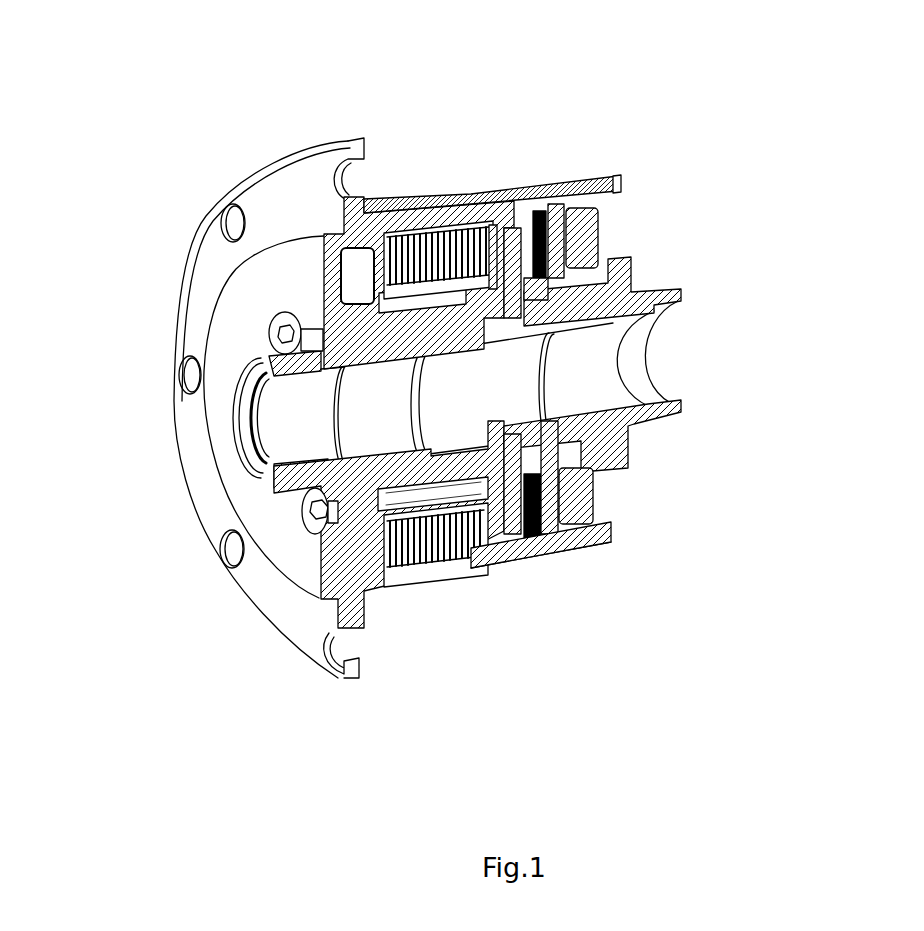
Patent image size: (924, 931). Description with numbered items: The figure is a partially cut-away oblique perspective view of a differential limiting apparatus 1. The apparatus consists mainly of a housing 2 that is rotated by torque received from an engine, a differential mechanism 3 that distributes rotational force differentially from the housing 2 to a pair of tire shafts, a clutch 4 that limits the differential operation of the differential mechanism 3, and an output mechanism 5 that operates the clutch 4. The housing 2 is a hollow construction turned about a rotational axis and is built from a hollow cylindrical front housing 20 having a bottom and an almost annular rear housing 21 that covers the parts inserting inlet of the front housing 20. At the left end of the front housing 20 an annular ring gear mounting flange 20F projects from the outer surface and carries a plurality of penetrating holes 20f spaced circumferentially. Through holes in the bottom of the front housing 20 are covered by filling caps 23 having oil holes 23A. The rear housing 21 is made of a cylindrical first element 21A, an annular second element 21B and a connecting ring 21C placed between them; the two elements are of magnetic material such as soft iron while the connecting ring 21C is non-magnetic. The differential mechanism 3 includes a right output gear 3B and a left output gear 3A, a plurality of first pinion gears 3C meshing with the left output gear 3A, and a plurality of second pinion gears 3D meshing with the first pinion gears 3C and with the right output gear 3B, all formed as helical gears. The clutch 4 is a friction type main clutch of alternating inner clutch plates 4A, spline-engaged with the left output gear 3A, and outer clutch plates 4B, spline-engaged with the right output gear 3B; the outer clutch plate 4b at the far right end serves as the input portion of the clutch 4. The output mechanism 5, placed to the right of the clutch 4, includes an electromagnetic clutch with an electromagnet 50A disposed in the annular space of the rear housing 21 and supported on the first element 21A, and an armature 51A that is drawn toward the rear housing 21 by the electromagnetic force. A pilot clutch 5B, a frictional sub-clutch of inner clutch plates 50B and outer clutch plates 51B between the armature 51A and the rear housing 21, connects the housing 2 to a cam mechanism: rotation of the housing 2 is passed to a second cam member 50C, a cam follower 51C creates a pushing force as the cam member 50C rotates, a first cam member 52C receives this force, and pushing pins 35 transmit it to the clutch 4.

The differential limiting apparatus 1 is at (786, 132).
The housing 2 is at (858, 753).
The differential mechanism 3 is at (400, 222).
The left output gear 3A is at (396, 364).
The right output gear 3B is at (590, 341).
The first pinion gears 3C is at (318, 568).
The second pinion gears 3D is at (350, 315).
The clutch 4 is at (680, 655).
The inner clutch plates 4A is at (455, 560).
The outer clutch plates 4B is at (400, 604).
The outer clutch plate 4b is at (598, 518).
The output mechanism 5 is at (606, 497).
The pilot clutch 5B is at (603, 50).
The front housing 20 is at (396, 606).
The ring gear mounting flange 20F is at (268, 190).
The penetrating holes 20f is at (185, 373).
The rear housing 21 is at (545, 556).
The first element 21A is at (680, 292).
The second element 21B is at (620, 192).
The connecting ring 21C is at (620, 178).
The filling caps 23 is at (265, 325).
The oil holes 23A is at (276, 346).
The pushing pins 35 is at (487, 222).
The electromagnet 50A is at (590, 232).
The inner clutch plates 50B is at (536, 210).
The second cam member 50C is at (602, 482).
The armature 51A is at (610, 534).
The outer clutch plates 51B is at (553, 210).
The cam follower 51C is at (605, 244).
The first cam member 52C is at (640, 442).